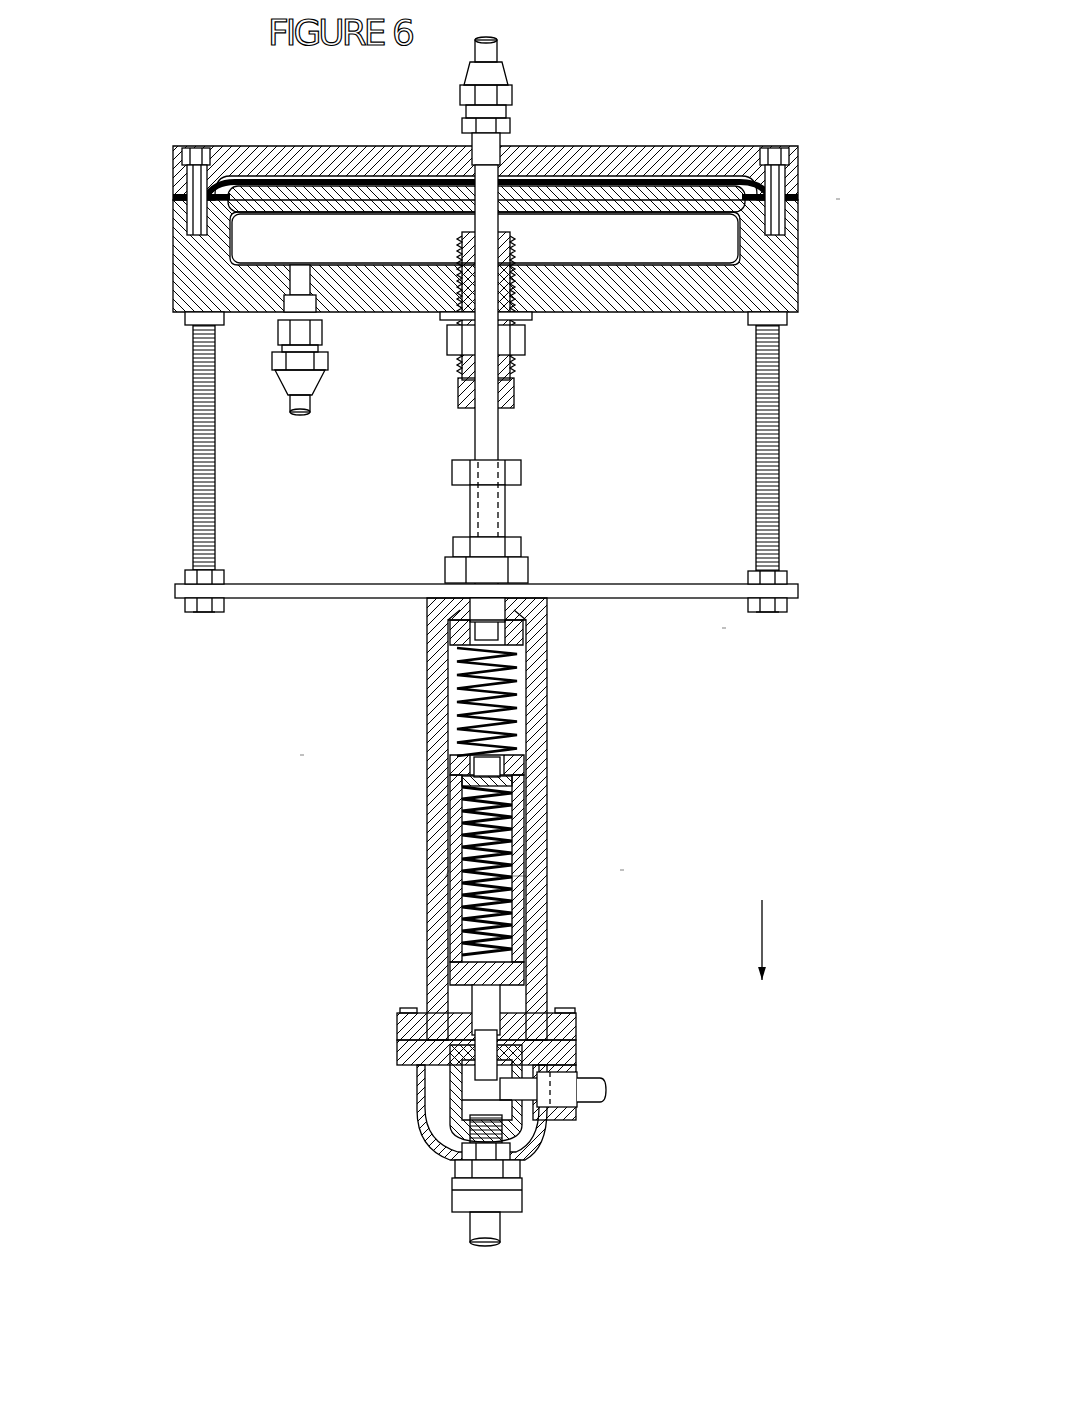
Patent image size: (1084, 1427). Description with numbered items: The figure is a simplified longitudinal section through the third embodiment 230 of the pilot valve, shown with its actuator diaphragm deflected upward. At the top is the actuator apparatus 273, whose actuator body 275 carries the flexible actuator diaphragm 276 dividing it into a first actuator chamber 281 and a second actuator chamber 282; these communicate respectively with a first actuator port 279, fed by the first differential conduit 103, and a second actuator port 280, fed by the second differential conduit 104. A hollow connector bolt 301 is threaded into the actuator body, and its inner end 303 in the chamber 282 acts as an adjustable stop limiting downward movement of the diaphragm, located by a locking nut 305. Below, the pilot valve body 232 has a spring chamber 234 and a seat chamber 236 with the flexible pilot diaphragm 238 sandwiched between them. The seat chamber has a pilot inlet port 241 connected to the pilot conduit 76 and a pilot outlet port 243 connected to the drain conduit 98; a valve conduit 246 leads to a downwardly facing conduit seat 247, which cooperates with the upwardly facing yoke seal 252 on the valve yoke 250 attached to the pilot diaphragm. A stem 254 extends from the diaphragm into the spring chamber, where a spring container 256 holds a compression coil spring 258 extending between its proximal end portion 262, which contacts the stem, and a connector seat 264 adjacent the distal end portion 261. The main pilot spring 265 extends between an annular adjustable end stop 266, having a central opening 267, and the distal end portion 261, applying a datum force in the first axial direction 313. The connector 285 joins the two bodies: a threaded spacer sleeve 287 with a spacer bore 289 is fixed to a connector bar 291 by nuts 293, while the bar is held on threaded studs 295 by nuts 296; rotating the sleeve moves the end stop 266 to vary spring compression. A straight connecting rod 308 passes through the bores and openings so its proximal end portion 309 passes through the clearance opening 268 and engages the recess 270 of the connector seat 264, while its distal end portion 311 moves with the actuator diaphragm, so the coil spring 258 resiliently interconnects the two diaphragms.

The first differential conduit 103 is at (497, 48).
The first actuator port 279 is at (492, 147).
The actuator diaphragm 276 is at (612, 160).
The actuator apparatus 273 is at (838, 199).
The first actuator chamber 281 is at (236, 150).
The second actuator chamber 282 is at (378, 252).
The distal end portion of the connecting rod 311 is at (505, 212).
The inner end of the connector bolt 303 is at (523, 243).
The actuator body 275 is at (800, 280).
The second actuator port 280 is at (315, 322).
The locking nut 305 is at (528, 335).
The hollow connector bolt 301 is at (516, 395).
The second differential conduit 104 is at (315, 412).
The connecting rod 308 is at (500, 430).
The threaded studs 295 is at (782, 450).
The threaded spacer sleeve 287 is at (512, 505).
The spacer bore 289 is at (466, 502).
The nuts on the spacer sleeve 293 is at (530, 562).
The connector bar 291 is at (640, 586).
The nuts on the threaded studs 296 is at (181, 572).
The central opening of the end stop 267 is at (440, 605).
The annular adjustable end stop 266 is at (530, 642).
The main pilot spring 265 is at (520, 682).
The proximal end portion of the connecting rod 309 is at (490, 765).
The spring chamber 234 is at (530, 778).
The clearance opening 268 is at (435, 742).
The distal end portion of the spring container 261 is at (535, 782).
The connector seat 264 is at (445, 792).
The recess 270 is at (505, 852).
The pilot valve body 232 is at (622, 870).
The third embodiment of the pilot valve 230 is at (300, 757).
The spring container 256 is at (442, 876).
The compression coil spring 258 is at (522, 910).
The first axial direction 313 is at (762, 935).
The proximal end portion of the spring container 262 is at (520, 1005).
The stem 254 is at (430, 1012).
The pilot inlet port 241 is at (578, 1064).
The pilot diaphragm 238 is at (462, 1090).
The pilot conduit 76 is at (607, 1092).
The valve yoke 250 is at (456, 1120).
The valve conduit 246 is at (556, 1118).
The conduit seat 247 is at (466, 1152).
The seat chamber 236 is at (545, 1165).
The yoke seal 252 is at (470, 1140).
The pilot outlet port 243 is at (500, 1192).
The drain conduit 98 is at (492, 1246).
The connector 285 is at (724, 628).